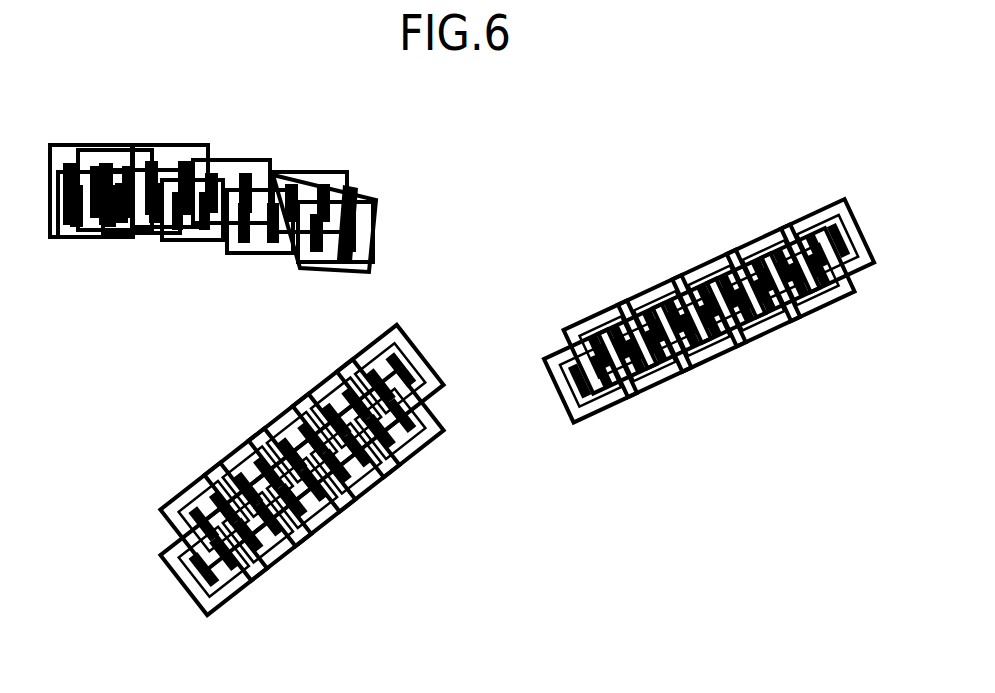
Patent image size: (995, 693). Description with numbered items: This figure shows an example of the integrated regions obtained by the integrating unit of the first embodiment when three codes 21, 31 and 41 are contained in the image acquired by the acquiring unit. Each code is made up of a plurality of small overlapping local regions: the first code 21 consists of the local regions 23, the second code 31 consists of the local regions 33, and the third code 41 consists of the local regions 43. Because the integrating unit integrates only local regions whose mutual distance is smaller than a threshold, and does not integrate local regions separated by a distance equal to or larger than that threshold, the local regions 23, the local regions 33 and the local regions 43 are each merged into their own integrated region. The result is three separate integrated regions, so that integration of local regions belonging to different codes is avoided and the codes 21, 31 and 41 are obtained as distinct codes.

The code 21 is at (377, 200).
The local regions 23 is at (72, 143).
The code 31 is at (399, 340).
The local regions 33 is at (330, 380).
The code 41 is at (840, 224).
The local regions 43 is at (548, 335).